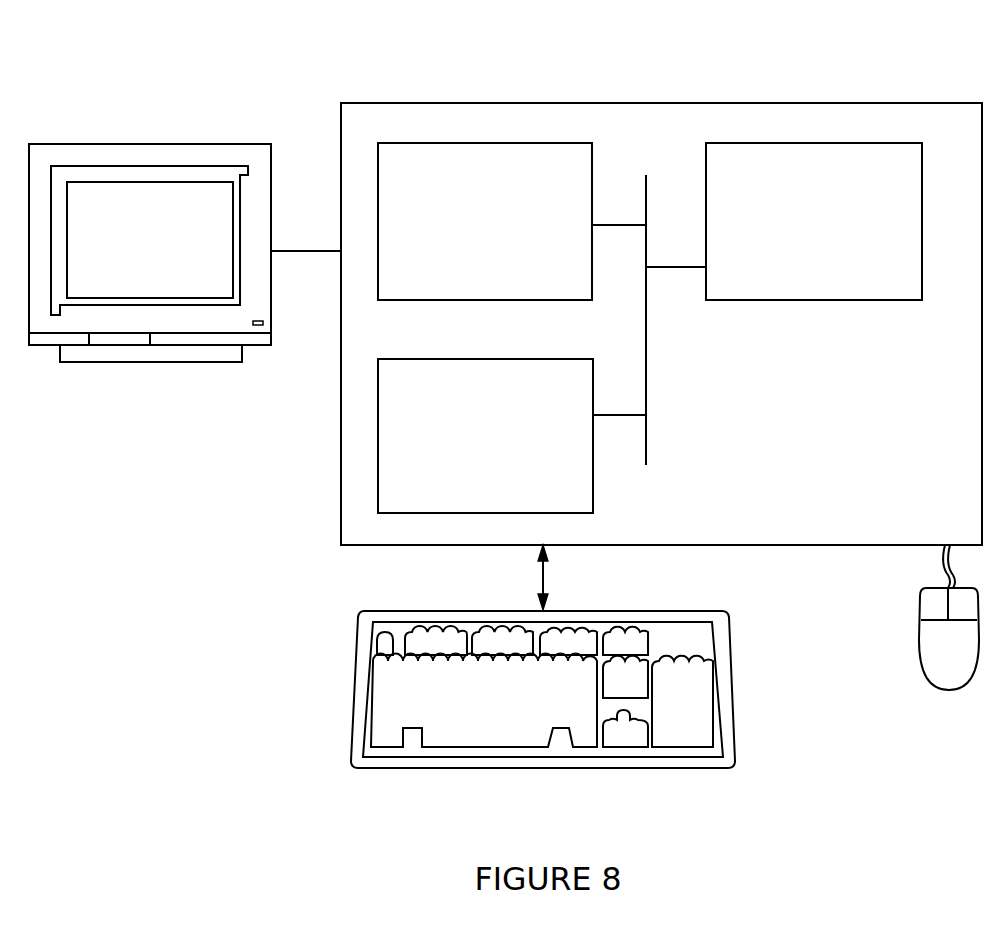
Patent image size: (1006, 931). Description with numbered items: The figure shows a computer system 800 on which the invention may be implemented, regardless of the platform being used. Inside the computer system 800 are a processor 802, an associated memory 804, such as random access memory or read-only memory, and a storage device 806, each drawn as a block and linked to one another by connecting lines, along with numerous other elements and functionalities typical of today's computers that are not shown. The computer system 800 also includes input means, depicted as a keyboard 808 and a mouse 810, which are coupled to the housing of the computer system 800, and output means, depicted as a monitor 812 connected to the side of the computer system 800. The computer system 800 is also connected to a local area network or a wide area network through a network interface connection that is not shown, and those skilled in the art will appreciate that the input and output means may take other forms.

The computer system 800 is at (698, 53).
The processor 802 is at (823, 231).
The associated memory 804 is at (506, 231).
The storage device 806 is at (504, 449).
The keyboard 808 is at (504, 716).
The mouse 810 is at (969, 661).
The monitor 812 is at (168, 255).